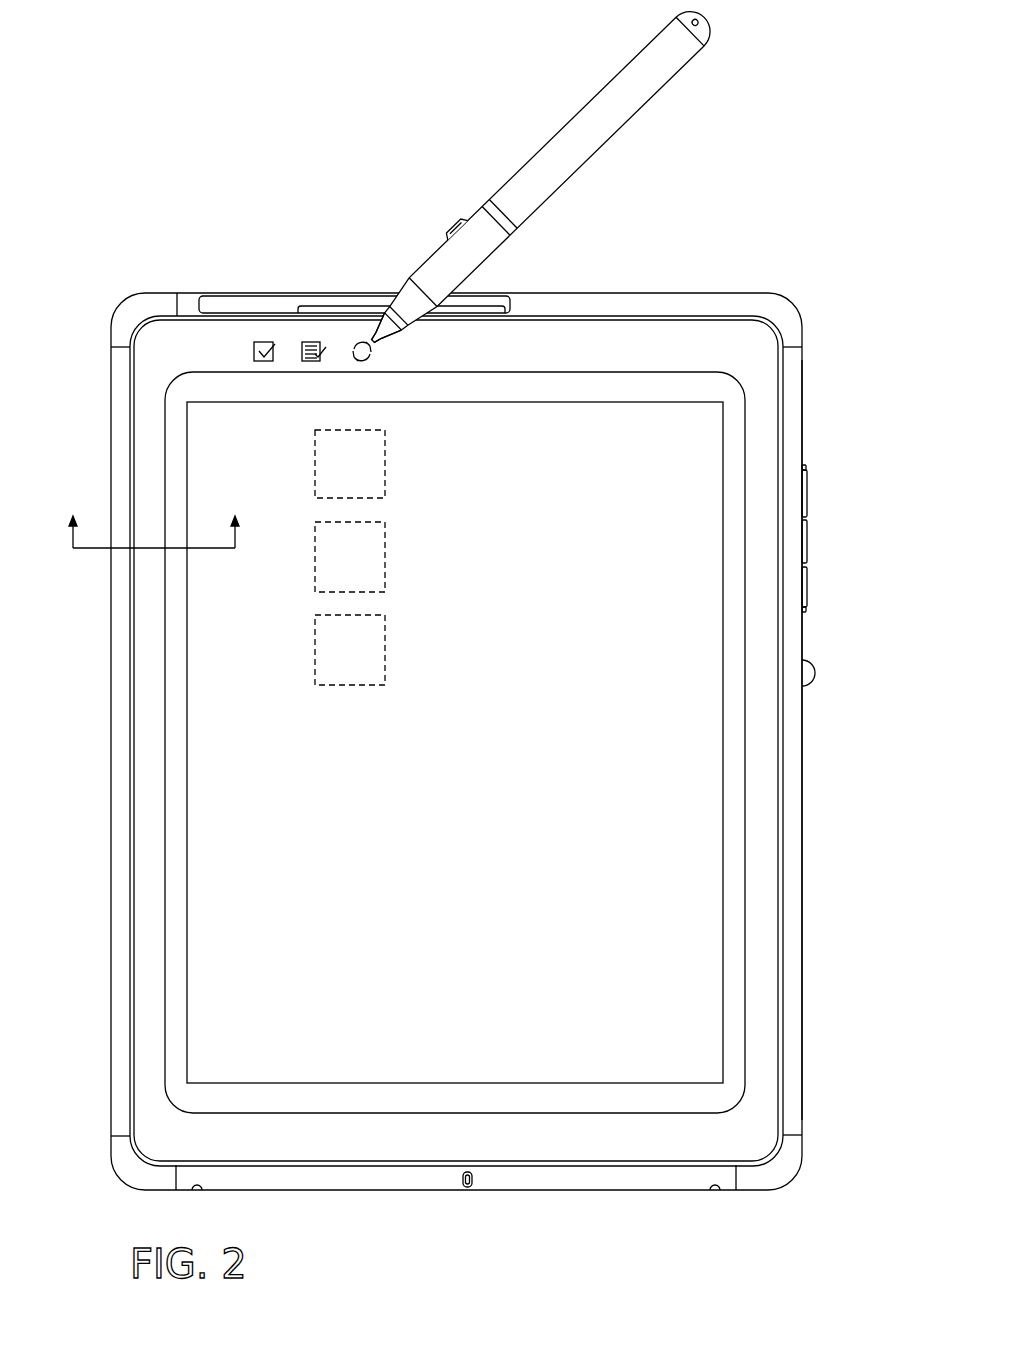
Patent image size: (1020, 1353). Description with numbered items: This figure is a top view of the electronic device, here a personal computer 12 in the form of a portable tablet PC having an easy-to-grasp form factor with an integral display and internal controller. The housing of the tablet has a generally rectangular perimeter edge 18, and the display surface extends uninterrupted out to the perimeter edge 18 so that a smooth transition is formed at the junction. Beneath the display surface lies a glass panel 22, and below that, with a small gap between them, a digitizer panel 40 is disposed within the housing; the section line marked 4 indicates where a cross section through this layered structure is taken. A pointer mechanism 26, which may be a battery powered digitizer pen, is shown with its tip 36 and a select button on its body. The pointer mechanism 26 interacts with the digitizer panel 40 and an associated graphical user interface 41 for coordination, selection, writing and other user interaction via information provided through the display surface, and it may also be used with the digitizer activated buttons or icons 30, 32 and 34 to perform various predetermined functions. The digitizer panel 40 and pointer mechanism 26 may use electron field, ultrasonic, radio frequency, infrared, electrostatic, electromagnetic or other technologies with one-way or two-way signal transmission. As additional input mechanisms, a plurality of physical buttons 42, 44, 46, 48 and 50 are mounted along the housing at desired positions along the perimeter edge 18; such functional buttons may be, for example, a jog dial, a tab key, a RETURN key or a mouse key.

The section line 4- 4 is at (153, 531).
The personal computer 12 is at (797, 310).
The perimeter edge 18 is at (708, 293).
The glass panel 22 is at (778, 1078).
The pointer mechanism 26 is at (544, 177).
The digitizer activated button 30 is at (257, 345).
The digitizer activated button 32 is at (307, 342).
The digitizer activated button 34 is at (357, 342).
The tip 36 is at (478, 298).
The digitizer panel 40 is at (187, 665).
The graphical user interface 41 is at (385, 620).
The physical button 42 is at (811, 667).
The physical button 44 is at (807, 587).
The physical button 46 is at (807, 547).
The physical button 48 is at (807, 503).
The physical button 50 is at (802, 420).